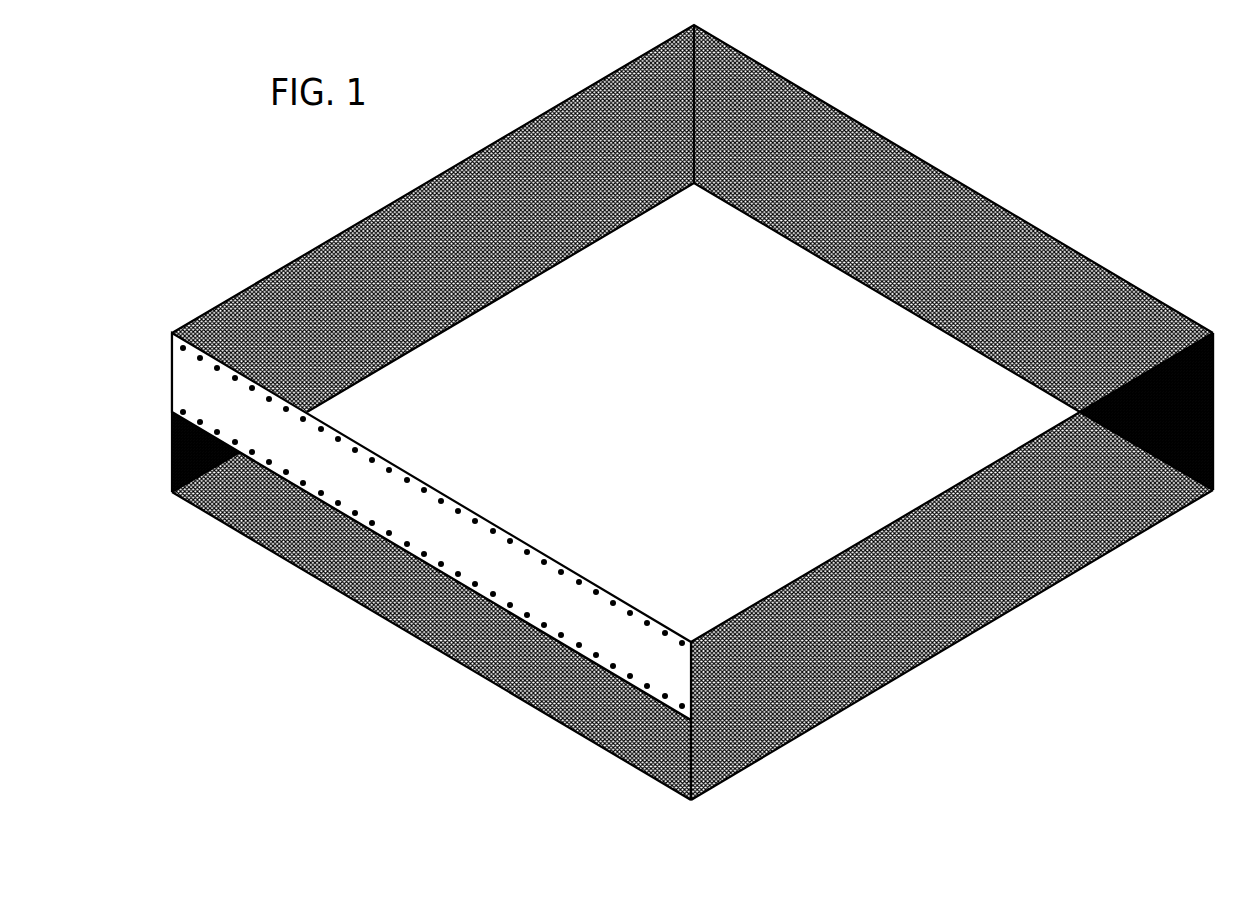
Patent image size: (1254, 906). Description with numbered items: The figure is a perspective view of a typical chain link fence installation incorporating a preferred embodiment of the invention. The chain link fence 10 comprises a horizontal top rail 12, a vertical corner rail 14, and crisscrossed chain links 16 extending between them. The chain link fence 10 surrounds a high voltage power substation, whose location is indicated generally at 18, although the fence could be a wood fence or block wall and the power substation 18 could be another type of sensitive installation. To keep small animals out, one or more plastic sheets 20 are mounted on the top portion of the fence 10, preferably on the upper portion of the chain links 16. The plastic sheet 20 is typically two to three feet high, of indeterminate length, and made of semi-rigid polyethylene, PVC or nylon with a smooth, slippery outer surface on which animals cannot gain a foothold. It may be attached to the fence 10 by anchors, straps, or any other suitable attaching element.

The chain link fence 10 is at (1038, 602).
The horizontal top rail 12 is at (900, 520).
The vertical corner rail 14 is at (701, 792).
The chain links 16 is at (933, 627).
The power substation 18 is at (719, 411).
The plastic sheet 20 is at (506, 530).